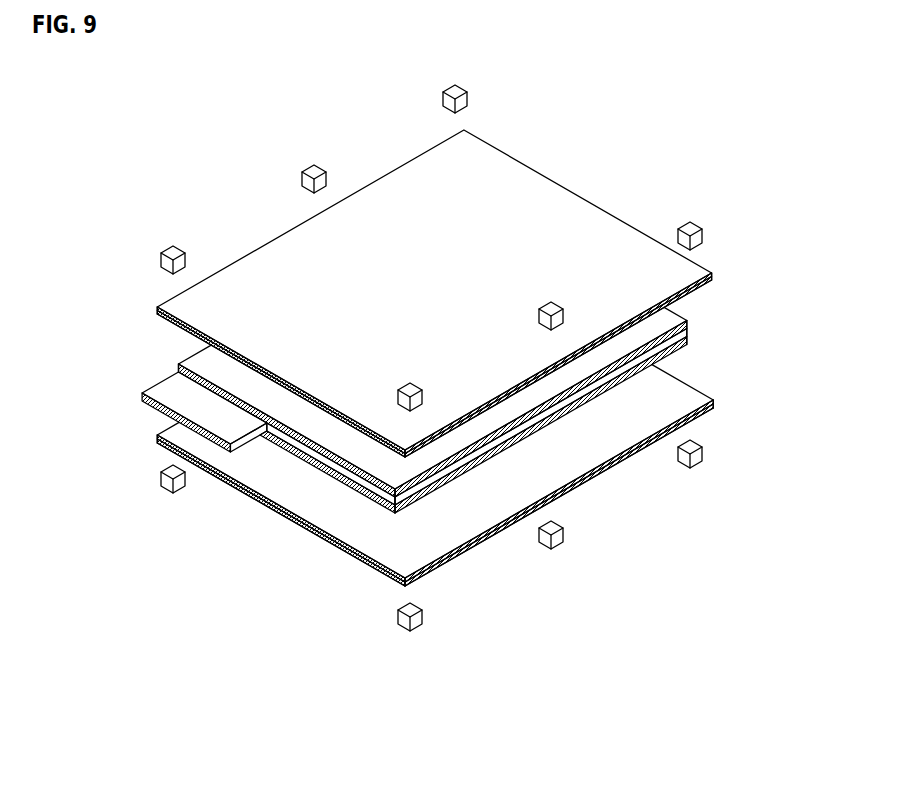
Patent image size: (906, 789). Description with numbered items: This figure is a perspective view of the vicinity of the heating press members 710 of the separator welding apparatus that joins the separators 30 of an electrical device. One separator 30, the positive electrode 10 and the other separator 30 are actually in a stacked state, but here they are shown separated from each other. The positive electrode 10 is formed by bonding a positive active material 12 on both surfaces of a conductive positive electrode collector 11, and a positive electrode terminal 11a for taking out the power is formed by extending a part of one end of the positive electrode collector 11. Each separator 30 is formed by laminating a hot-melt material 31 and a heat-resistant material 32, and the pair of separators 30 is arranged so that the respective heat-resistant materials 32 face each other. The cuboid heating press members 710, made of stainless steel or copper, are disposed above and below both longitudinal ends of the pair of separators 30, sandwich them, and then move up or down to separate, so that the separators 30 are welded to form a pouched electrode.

The positive electrode 10 is at (430, 374).
The positive electrode collector 11 is at (395, 463).
The positive electrode terminal 11a is at (158, 403).
The positive active material 12 is at (392, 493).
The separator 30 is at (430, 374).
The hot-melt material 31 is at (157, 309).
The heat-resistant material 32 is at (157, 313).
The heating press member 710 is at (177, 275).